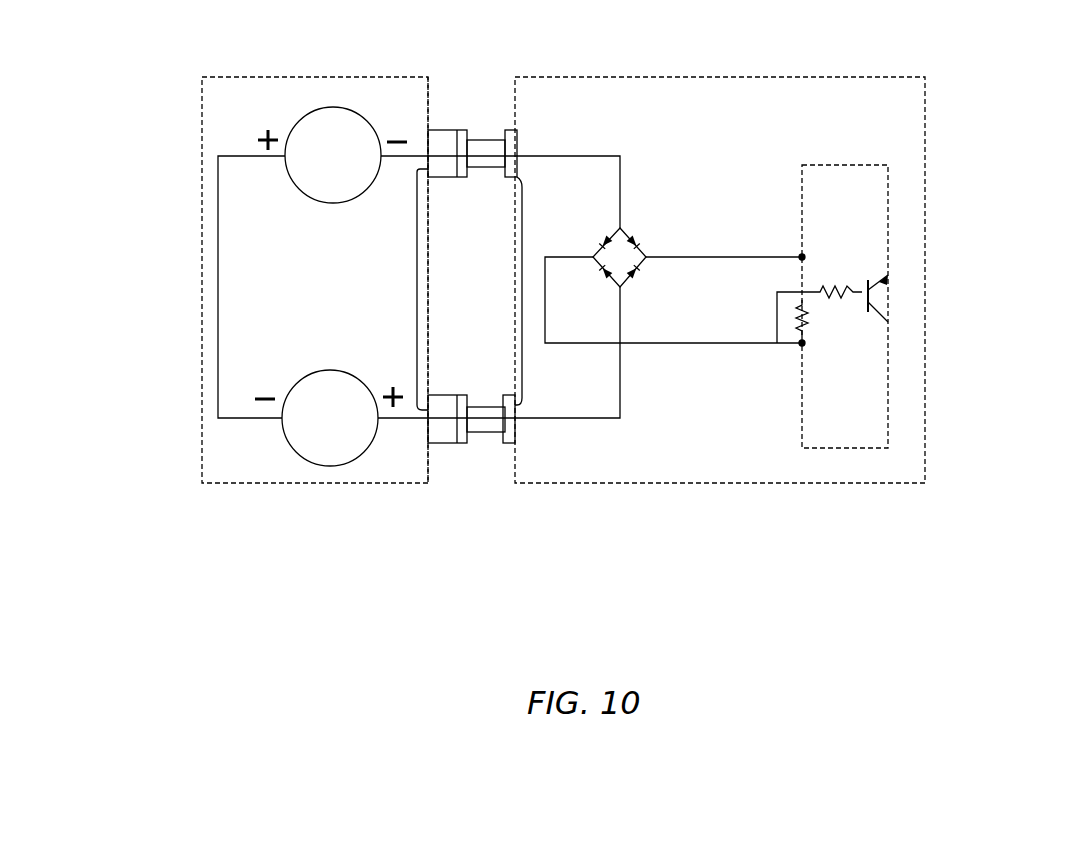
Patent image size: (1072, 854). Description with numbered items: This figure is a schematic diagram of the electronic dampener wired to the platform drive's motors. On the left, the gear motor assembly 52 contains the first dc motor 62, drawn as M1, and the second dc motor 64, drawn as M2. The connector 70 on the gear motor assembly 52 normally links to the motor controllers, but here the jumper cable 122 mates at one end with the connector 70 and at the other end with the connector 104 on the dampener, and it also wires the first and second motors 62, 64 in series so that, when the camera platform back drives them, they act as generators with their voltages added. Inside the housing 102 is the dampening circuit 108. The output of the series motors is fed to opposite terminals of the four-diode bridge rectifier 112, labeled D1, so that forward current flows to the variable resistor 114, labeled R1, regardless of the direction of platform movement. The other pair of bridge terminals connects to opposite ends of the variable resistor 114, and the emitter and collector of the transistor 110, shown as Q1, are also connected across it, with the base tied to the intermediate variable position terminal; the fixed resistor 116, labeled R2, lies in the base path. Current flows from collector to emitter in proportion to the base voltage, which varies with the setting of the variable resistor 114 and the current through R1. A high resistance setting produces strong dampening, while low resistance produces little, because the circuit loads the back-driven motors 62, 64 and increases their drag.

The gear motor assembly 52 is at (434, 112).
The first dc motor 62 is at (323, 203).
The second dc motor 64 is at (323, 370).
The connector 70 is at (416, 290).
The housing 102 is at (777, 487).
The connector 104 is at (524, 222).
The dampening circuit 108 is at (721, 355).
The transistor 110 is at (873, 308).
The rectifier 112 is at (677, 197).
The variable resistor 114 is at (794, 327).
The fixed resistor 116 is at (822, 282).
The jumper cable 122 is at (487, 140).
The motor M1 is at (332, 155).
The motor M2 is at (329, 418).
The diode bridge D1 is at (650, 255).
The resistor R1 is at (812, 321).
The resistor R2 is at (819, 306).
The transistor Q1 is at (877, 230).